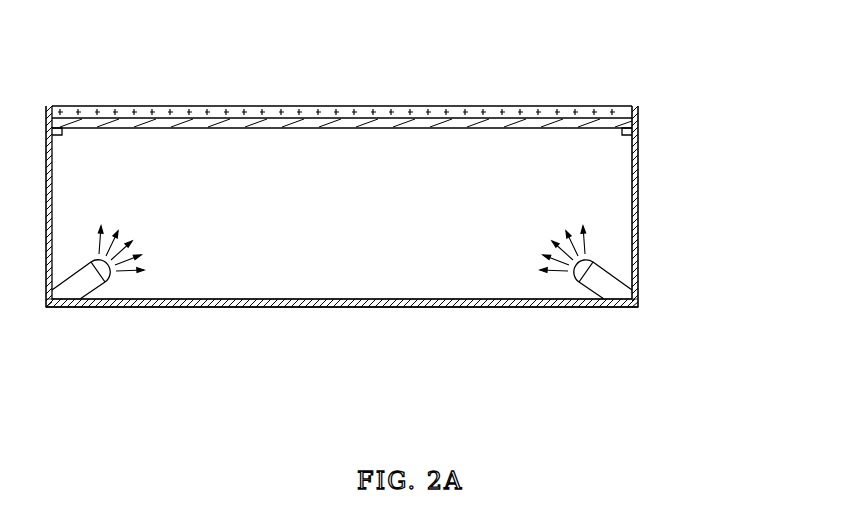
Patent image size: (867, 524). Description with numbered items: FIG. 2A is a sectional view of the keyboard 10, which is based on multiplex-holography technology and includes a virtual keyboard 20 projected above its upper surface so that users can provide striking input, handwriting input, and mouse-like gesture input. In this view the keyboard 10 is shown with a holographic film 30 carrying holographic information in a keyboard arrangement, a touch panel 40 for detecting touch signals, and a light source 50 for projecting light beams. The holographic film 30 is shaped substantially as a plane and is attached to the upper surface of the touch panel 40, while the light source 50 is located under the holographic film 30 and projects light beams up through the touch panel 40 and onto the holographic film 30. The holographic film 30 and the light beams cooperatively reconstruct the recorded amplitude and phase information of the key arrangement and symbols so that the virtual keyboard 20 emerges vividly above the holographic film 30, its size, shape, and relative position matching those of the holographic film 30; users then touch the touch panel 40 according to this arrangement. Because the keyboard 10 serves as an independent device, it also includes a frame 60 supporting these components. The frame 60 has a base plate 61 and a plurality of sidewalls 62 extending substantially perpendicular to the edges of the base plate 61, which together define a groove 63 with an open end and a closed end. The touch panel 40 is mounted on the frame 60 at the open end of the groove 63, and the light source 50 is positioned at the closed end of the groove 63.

The keyboard 10 is at (157, 82).
The virtual keyboard 20 is at (323, 106).
The holographic film 30 is at (531, 110).
The touch panel 40 is at (618, 125).
The light source 50 is at (92, 290).
The frame 60 is at (687, 344).
The base plate 61 is at (530, 307).
The sidewalls 62 is at (640, 237).
The groove 63 is at (315, 243).